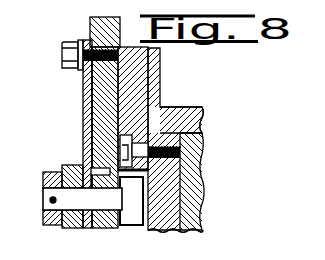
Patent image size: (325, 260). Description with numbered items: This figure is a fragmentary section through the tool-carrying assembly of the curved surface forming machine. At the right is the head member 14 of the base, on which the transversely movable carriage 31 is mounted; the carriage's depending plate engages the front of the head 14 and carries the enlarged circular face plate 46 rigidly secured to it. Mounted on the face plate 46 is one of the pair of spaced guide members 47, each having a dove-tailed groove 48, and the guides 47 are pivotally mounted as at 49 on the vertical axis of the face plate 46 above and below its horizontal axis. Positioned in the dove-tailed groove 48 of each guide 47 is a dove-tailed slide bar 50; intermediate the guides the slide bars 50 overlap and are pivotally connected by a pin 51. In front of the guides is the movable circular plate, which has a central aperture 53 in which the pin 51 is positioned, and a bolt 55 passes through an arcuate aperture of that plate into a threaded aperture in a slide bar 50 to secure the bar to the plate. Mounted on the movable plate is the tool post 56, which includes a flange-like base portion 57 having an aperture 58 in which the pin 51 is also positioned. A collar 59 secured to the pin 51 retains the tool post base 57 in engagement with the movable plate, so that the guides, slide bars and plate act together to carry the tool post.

The head member 14 is at (198, 190).
The carriage 31 is at (198, 115).
The face plate 46 is at (157, 62).
The guide member 47 is at (83, 79).
The dove-tailed groove 48 is at (92, 95).
The pivot 49 is at (180, 149).
The slide bar 50 is at (97, 108).
The pin 51 is at (43, 193).
The central aperture 53 is at (84, 176).
The bolt 55 is at (70, 41).
The tool post 56 is at (96, 44).
The flange-like base portion 57 is at (62, 173).
The aperture 58 is at (72, 170).
The collar 59 is at (43, 212).